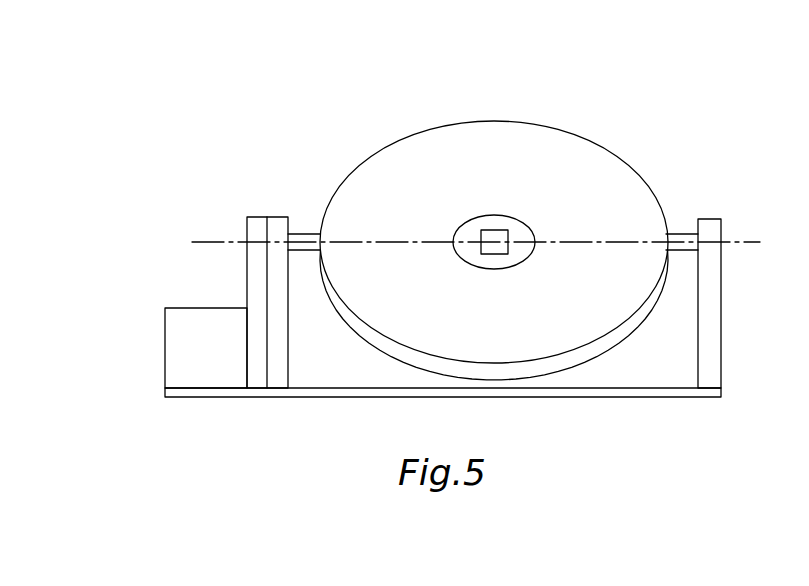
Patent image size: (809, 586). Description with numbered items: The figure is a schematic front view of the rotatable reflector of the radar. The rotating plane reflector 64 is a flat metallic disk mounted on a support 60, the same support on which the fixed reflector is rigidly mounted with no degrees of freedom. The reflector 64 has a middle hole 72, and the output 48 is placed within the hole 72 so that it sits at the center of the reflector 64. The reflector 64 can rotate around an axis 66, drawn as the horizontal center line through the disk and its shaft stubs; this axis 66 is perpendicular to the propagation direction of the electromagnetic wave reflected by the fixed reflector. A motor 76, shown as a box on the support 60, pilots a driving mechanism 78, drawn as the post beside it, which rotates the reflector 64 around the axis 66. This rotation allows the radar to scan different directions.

The output 48 is at (494, 254).
The support 60 is at (629, 397).
The rotating plane reflector 64 is at (602, 172).
The axis 66 is at (742, 242).
The middle hole 72 is at (494, 217).
The motor 76 is at (187, 349).
The driving mechanism 78 is at (265, 278).